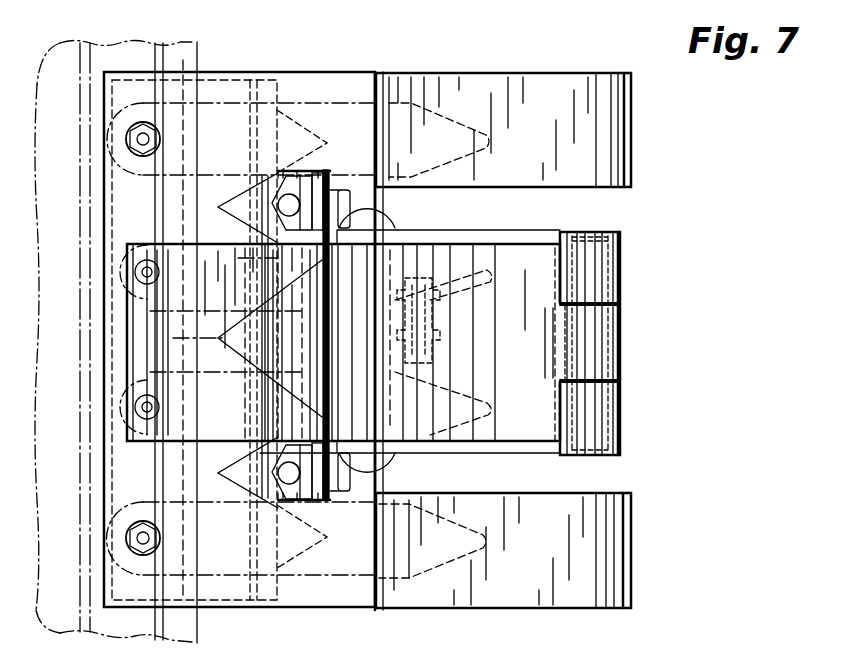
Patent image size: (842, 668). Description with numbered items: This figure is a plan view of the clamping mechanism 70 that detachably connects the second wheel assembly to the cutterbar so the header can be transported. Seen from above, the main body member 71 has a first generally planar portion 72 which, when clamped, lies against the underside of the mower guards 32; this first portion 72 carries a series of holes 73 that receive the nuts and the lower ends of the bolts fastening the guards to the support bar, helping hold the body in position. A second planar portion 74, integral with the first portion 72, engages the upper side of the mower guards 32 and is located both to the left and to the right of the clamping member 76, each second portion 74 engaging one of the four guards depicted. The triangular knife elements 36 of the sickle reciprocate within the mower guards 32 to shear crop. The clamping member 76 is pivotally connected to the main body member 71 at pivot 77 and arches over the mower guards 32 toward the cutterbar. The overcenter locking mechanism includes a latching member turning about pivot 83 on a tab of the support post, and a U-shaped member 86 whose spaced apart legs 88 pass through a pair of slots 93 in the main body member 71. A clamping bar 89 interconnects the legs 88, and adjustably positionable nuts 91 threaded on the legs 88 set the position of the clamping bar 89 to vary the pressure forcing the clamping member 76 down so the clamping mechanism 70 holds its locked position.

The mower guards 32 is at (490, 300).
The knife elements 36 is at (248, 72).
The clamping mechanism 70 is at (662, 318).
The main body member 71 is at (377, 610).
The first generally planar portion 72 is at (280, 72).
The holes 73 is at (148, 568).
The second planar portion 74 is at (545, 72).
The clamping member 76 is at (465, 244).
The pivot 77 is at (600, 232).
The pivot 83 is at (445, 300).
The U-shaped member 86 is at (393, 215).
The legs 88 is at (272, 205).
The clamping bar 89 is at (333, 170).
The nuts 91 is at (310, 172).
The slots 93 is at (543, 188).